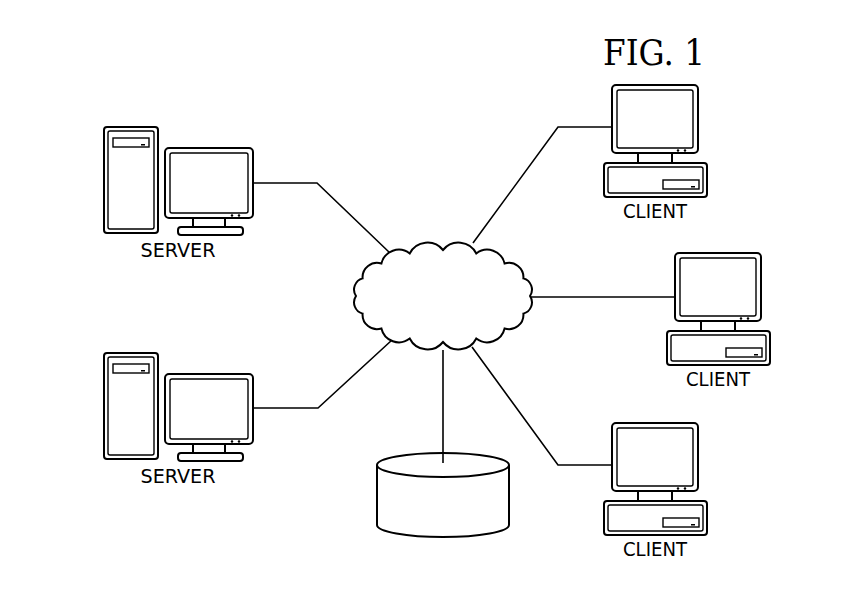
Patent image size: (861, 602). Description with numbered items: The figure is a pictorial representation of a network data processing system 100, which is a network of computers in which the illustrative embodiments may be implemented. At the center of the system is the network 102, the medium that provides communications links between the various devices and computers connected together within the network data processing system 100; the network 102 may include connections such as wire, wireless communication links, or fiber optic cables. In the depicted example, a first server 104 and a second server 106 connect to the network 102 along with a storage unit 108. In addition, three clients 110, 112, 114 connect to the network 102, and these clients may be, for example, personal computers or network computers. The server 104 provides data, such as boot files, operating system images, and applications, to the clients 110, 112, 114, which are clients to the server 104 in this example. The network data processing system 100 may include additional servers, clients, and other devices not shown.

The network data processing system 100 is at (320, 97).
The network 102 is at (440, 243).
The server 104 is at (104, 182).
The server 106 is at (104, 406).
The storage unit 108 is at (378, 497).
The client 110 is at (710, 180).
The client 112 is at (773, 350).
The client 114 is at (710, 518).